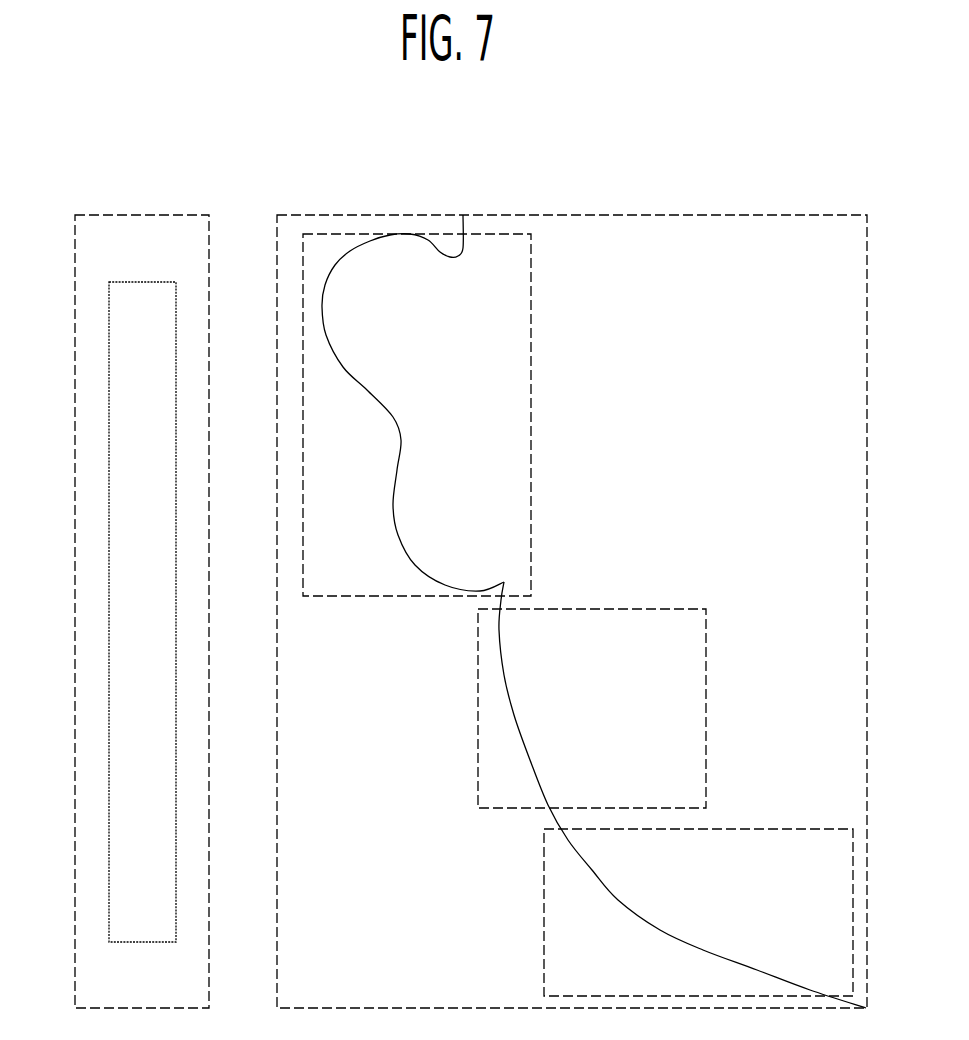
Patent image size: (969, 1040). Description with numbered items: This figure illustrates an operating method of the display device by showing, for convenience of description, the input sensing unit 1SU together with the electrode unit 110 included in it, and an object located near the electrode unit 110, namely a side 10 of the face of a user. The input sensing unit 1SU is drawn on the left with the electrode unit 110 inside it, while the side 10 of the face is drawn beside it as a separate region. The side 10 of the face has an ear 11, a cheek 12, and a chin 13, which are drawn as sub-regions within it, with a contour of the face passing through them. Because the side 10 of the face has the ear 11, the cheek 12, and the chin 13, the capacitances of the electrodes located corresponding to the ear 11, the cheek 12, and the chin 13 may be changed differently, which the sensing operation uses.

The input sensing unit 1SU is at (167, 215).
The electrode unit 110 is at (109, 378).
The side of a face of a user 10 is at (597, 215).
The ear 11 is at (531, 405).
The cheek 12 is at (680, 609).
The chin 13 is at (797, 829).